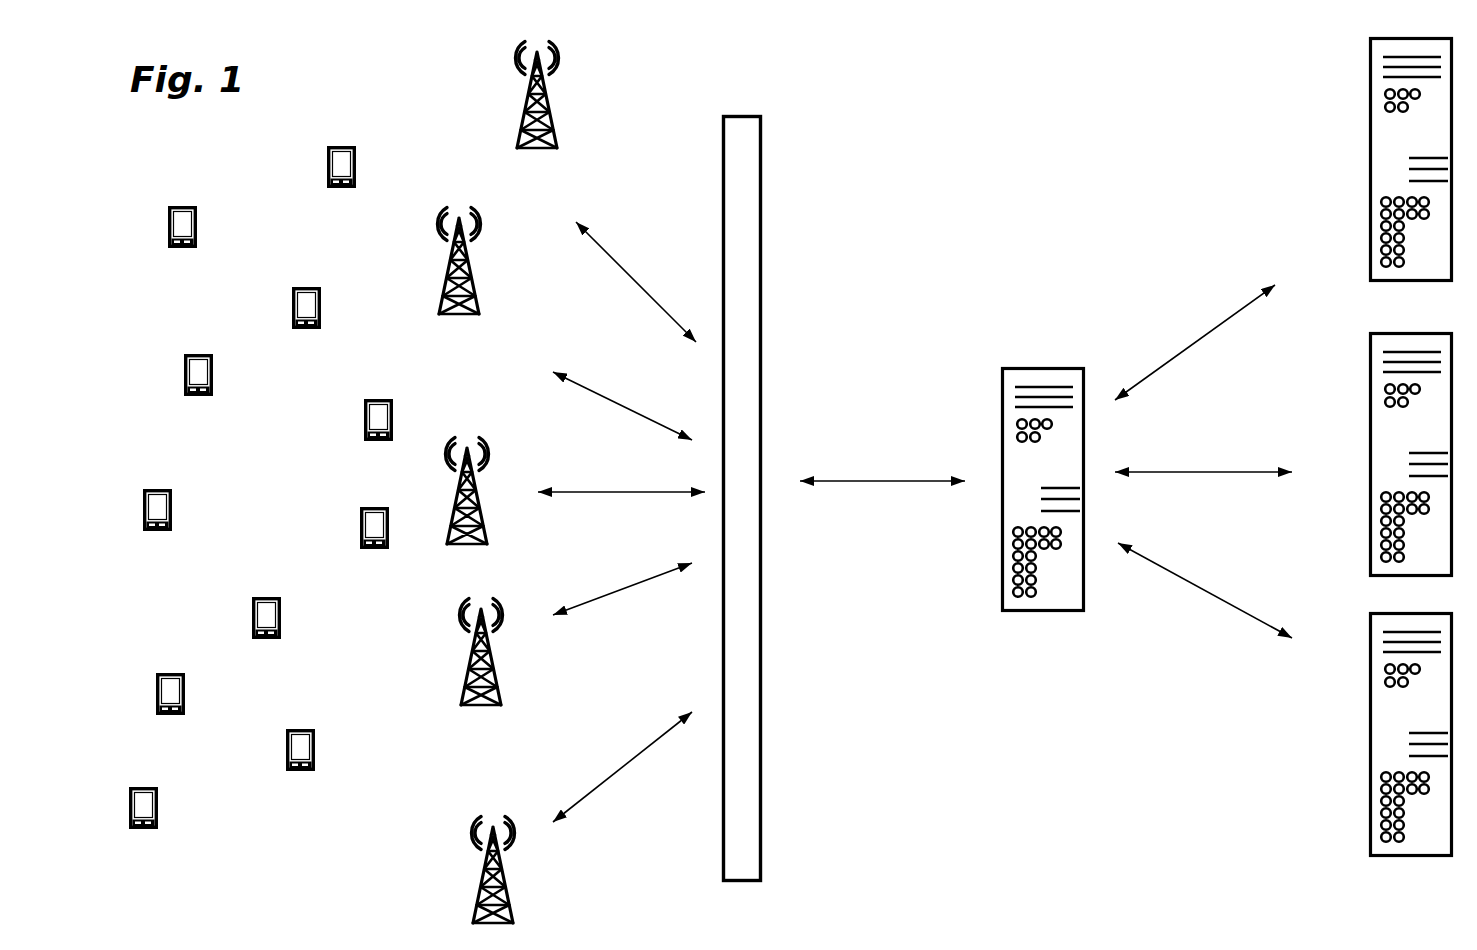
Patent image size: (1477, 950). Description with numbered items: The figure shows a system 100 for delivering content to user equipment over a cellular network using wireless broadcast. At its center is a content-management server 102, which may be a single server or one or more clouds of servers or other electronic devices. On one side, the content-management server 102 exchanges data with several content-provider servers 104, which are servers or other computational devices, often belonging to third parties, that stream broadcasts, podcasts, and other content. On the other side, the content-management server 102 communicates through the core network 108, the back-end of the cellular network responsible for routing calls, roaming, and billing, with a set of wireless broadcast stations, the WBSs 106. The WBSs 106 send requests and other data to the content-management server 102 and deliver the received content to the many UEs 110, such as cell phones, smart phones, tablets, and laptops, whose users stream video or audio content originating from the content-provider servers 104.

The system 100 is at (932, 104).
The content-management server 102 is at (1013, 366).
The content-provider servers 104 is at (1369, 178).
The wireless broadcast stations (WBSs) 106 is at (557, 148).
The core network 108 is at (761, 803).
The user equipment (UEs) 110 is at (327, 161).